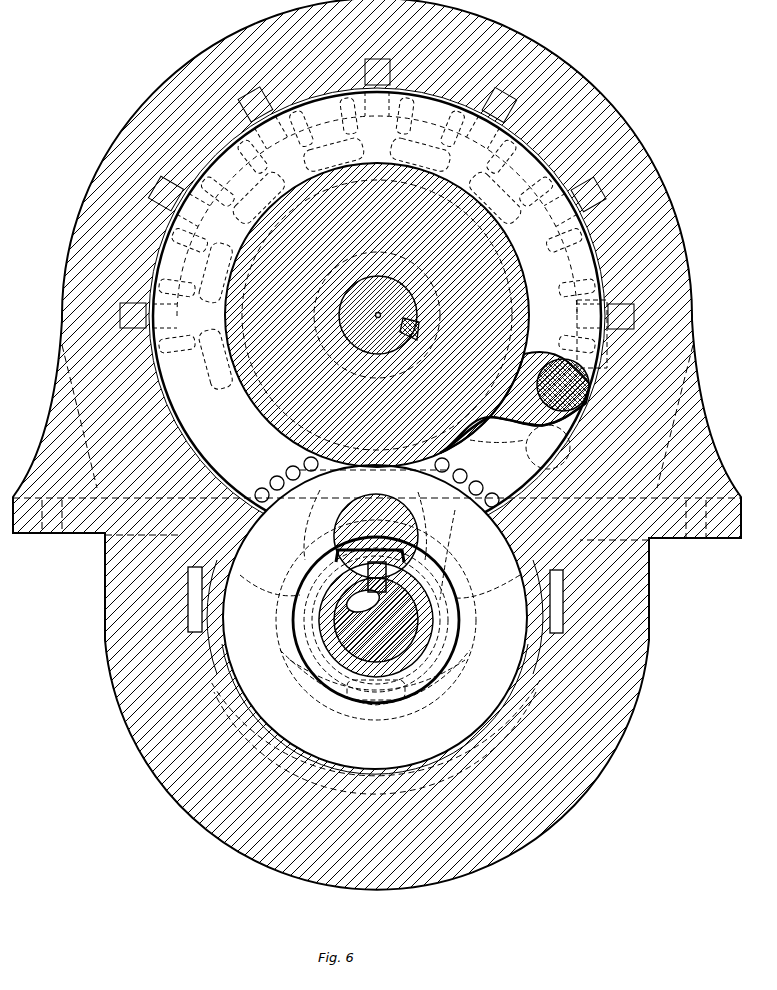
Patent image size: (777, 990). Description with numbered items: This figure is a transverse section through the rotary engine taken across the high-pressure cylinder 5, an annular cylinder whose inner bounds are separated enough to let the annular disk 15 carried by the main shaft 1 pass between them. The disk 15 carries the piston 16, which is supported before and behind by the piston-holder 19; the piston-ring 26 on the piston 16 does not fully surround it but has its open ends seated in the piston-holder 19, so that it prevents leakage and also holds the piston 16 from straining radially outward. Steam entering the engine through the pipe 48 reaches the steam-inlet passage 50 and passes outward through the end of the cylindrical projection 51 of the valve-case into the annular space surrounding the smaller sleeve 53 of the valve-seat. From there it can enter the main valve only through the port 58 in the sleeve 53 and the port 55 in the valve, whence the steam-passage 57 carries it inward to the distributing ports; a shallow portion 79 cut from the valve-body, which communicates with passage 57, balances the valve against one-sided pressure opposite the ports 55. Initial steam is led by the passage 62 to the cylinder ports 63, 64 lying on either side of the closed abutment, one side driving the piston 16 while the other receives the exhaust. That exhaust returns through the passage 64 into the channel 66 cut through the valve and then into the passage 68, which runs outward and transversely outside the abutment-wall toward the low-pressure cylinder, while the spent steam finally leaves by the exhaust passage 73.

The main shaft 1 is at (417, 300).
The high-pressure cylinder 5 is at (177, 331).
The annular disk 15 is at (407, 315).
The piston 16 is at (586, 334).
The piston-holder 19 is at (513, 428).
The piston-ring 26 is at (563, 402).
The steam pipe 48 is at (430, 628).
The steam-inlet passage 50 is at (357, 548).
The cylindrical projection of the valve-case 51 is at (318, 568).
The sleeve of the valve-seat 53 is at (375, 607).
The port in the valve 55 is at (385, 550).
The steam-passage 57 is at (376, 620).
The port in the sleeve 58 is at (377, 560).
The passage to the high-pressure cylinder 62 is at (380, 540).
The cylinder port 63 is at (470, 480).
The cylinder port and passage 64 is at (335, 530).
The channel through the valve 66 is at (330, 690).
The passage to the low-pressure cylinder 68 is at (545, 575).
The exhaust passage 73 is at (380, 700).
The shallow cut-away portion of the valve-body 79 is at (398, 668).